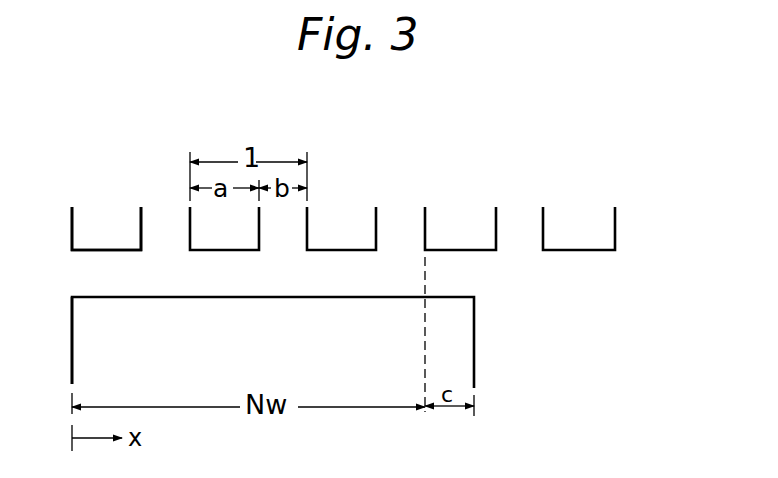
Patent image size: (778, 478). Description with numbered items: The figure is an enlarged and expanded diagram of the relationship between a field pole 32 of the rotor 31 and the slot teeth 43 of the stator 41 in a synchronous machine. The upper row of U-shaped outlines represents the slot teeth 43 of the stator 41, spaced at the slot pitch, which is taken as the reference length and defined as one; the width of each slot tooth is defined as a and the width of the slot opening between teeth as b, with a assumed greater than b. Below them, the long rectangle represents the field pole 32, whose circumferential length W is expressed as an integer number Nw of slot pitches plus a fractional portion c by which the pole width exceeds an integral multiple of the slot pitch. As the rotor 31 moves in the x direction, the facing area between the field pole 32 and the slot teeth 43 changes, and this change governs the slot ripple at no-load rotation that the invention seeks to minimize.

The rotor 31 is at (493, 342).
The field pole 32 is at (71, 331).
The stator 41 is at (629, 212).
The slot teeth 43 is at (71, 218).